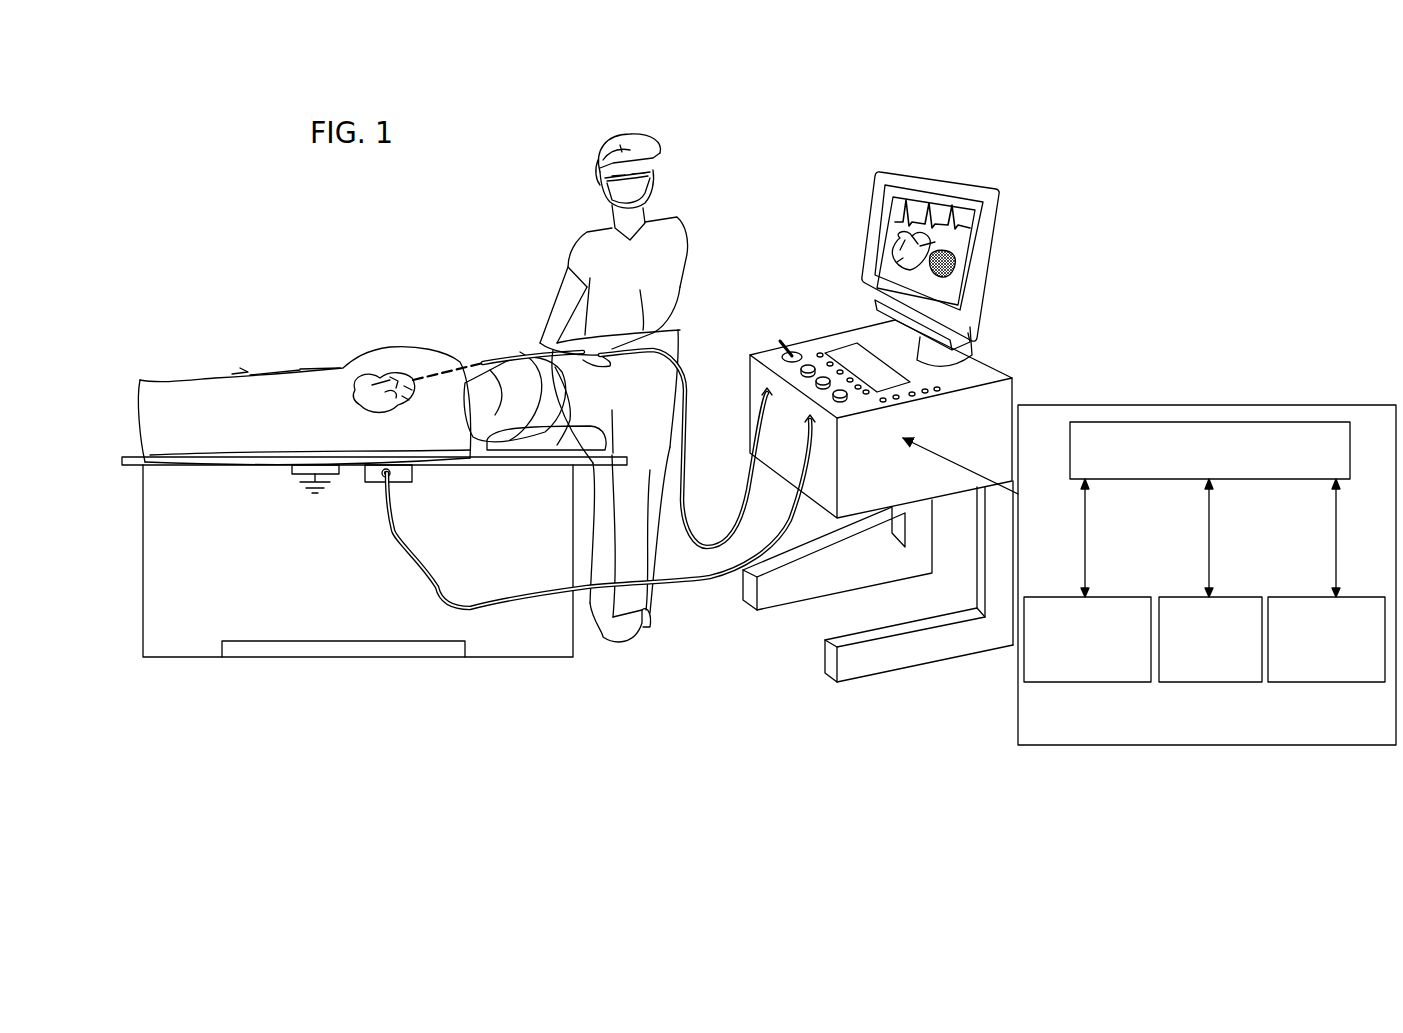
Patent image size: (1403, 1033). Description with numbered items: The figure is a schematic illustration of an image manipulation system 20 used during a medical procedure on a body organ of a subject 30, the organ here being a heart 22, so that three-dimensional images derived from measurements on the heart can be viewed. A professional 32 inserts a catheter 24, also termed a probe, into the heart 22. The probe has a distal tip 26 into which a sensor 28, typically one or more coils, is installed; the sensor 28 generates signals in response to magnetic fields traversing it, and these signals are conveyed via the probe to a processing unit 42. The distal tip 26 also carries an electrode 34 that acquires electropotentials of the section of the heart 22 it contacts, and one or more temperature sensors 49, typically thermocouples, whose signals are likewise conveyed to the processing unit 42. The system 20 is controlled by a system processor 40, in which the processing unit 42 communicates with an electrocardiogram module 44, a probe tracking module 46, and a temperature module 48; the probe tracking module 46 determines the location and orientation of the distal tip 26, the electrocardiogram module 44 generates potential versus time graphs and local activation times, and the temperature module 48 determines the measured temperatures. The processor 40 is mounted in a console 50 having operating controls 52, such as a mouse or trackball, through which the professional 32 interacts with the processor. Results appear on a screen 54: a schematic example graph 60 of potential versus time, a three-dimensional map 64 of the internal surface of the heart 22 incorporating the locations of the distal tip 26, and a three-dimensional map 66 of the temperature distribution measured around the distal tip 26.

The image manipulation system 20 is at (1178, 121).
The heart 22 is at (398, 380).
The catheter 24 is at (686, 375).
The distal tip 26 is at (378, 375).
The sensor 28 is at (355, 323).
The subject 30 is at (556, 434).
The professional 32 is at (597, 256).
The electrode 34 is at (314, 321).
The system processor 40 is at (1149, 577).
The processing unit 42 is at (1086, 422).
The electrocardiogram (ECG) module 44 is at (1242, 597).
The probe tracking module 46 is at (1071, 597).
The temperature module 48 is at (1363, 682).
The temperature sensors 49 is at (279, 320).
The console 50 is at (866, 472).
The operating controls 52 is at (768, 323).
The screen 54 is at (922, 248).
The schematic example of a graph 60 is at (900, 225).
The three-dimensional map 64 is at (905, 255).
The three-dimensional map of the temperature distribution 66 is at (945, 262).